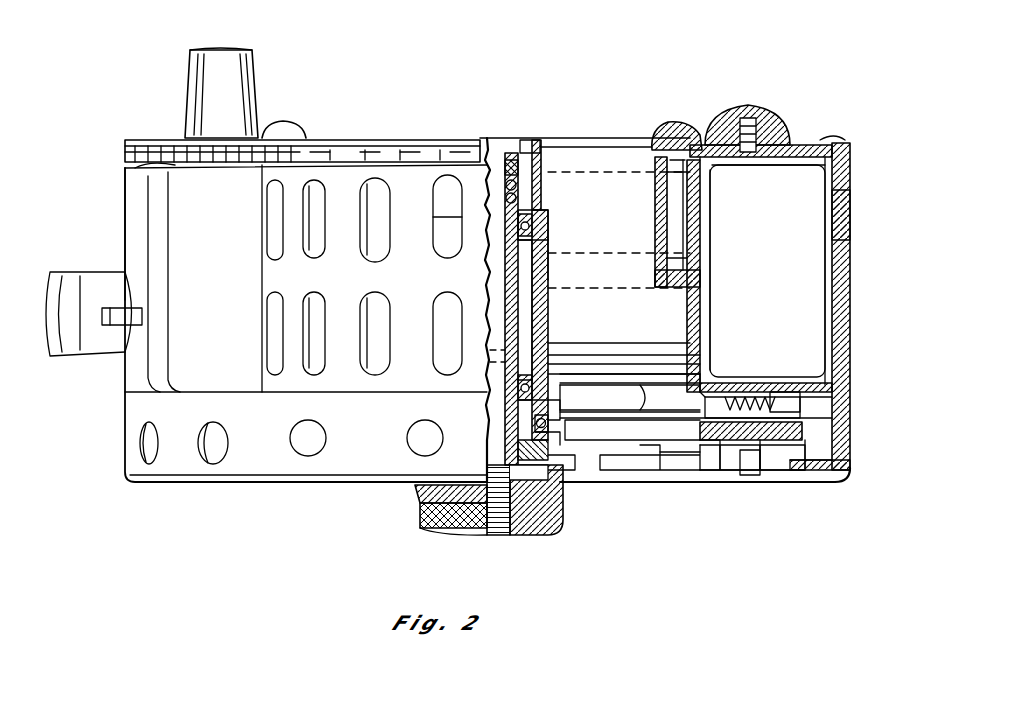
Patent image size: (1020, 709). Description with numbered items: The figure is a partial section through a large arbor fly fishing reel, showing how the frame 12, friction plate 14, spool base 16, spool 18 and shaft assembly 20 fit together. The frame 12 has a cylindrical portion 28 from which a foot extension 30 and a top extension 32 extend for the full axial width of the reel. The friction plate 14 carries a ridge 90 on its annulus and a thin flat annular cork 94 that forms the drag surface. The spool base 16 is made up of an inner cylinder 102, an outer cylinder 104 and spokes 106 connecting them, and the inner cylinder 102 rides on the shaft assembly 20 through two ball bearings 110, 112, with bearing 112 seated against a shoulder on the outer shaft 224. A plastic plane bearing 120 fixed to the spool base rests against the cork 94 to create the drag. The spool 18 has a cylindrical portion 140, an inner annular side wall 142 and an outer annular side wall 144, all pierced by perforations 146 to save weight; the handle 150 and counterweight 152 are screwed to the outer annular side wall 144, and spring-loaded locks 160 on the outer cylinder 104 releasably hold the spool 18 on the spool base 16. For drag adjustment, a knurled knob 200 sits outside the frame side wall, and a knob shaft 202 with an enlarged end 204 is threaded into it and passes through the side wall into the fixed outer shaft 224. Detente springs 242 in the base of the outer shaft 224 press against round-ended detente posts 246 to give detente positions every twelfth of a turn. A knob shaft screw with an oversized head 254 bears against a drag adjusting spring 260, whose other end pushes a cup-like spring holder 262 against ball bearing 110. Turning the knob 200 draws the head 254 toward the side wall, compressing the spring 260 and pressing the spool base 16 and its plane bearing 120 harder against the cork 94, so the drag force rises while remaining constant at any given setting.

The frame 12 is at (266, 487).
The friction plate 14 is at (655, 482).
The spool base 16 is at (734, 277).
The spool 18 is at (835, 138).
The shaft assembly 20 is at (499, 329).
The cylindrical portion 28 is at (280, 446).
The foot extension 30 is at (125, 186).
The top extension 32 is at (852, 215).
The ridge 90 is at (805, 470).
The annular cork 94 is at (805, 420).
The inner cylinder 102 is at (549, 280).
The outer cylinder 104 is at (687, 345).
The spokes 106 is at (622, 382).
The ball bearing 110 is at (548, 212).
The ball bearing 112 is at (534, 374).
The plane bearing 120 is at (835, 400).
The cylindrical portion 140 is at (710, 270).
The inner annular side wall 142 is at (800, 383).
The outer annular side wall 144 is at (806, 160).
The perforations 146 is at (710, 210).
The handle 150 is at (255, 64).
The counterweight 152 is at (752, 105).
The lock 160 is at (308, 128).
The knob 200 is at (415, 520).
The knob shaft 202 is at (490, 538).
The enlarged end 204 is at (515, 537).
The outer shaft 224 is at (549, 256).
The detente springs 242 is at (560, 470).
The detente posts 246 is at (575, 478).
The screw head 254 is at (520, 140).
The drag adjusting spring 260 is at (508, 160).
The spring holder 262 is at (540, 140).